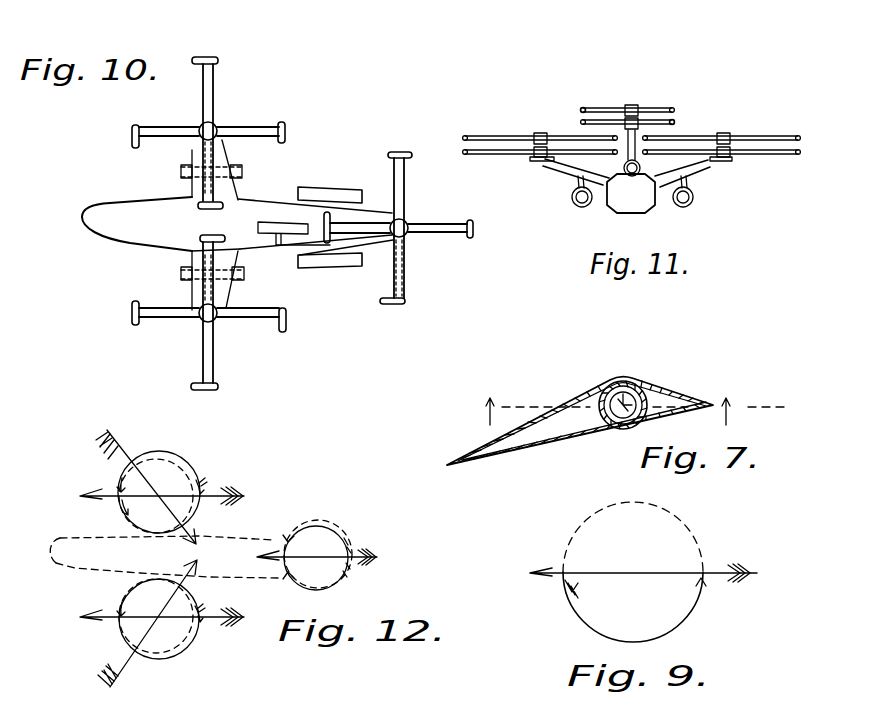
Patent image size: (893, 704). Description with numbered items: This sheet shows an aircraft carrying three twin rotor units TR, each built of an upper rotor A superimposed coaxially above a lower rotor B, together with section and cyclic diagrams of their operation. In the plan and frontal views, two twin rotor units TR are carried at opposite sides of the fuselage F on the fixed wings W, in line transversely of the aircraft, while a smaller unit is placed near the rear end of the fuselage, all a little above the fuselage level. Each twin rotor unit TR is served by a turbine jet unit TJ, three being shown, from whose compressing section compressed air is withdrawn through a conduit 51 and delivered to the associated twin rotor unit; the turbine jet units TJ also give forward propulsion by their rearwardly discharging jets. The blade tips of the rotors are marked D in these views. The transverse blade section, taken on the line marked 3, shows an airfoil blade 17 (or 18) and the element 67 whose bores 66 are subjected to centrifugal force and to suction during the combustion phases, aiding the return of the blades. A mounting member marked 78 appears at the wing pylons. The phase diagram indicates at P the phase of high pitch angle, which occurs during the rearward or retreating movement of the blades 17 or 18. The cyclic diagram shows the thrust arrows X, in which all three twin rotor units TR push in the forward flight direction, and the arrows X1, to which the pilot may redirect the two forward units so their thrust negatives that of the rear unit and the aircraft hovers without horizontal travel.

In FIG. 10, the blades 17 is at (249, 138).
In FIG. 11, the blades 17 is at (492, 136).
In FIG. 7, the blades 17 is at (691, 393).
In FIG. 11, the blades 18 is at (488, 154).
In FIG. 10, the conduit 51 is at (204, 153).
In FIG. 7, the bores 66 is at (601, 392).
In FIG. 7, the elements 67 is at (653, 385).
In FIG. 10, the rotor mount bracket 78 is at (181, 170).
In FIG. 11, the rotor mount bracket 78 is at (623, 167).
In FIG. 7, the section line 3- 3 is at (628, 415).
In FIG. 10, the blade tip cap D is at (197, 65).
In FIG. 11, the blade tip cap D is at (583, 107).
In FIG. 10, the twin rotor unit TR is at (155, 150).
In FIG. 11, the twin rotor unit TR is at (528, 128).
In FIG. 10, the wing W is at (237, 190).
In FIG. 11, the wing W is at (697, 168).
In FIG. 10, the fuselage F is at (80, 220).
In FIG. 10, the turbine jet unit TJ is at (272, 232).
In FIG. 11, the turbine jet unit TJ is at (572, 199).
In FIG. 12, the upper rotor A is at (173, 452).
In FIG. 12, the lower rotor B is at (154, 528).
In FIG. 12, the arrows X is at (82, 497).
In FIG. 9, the arrows X is at (546, 580).
In FIG. 12, the arrows X1 is at (199, 547).
In FIG. 9, the phase of high pitch angle P is at (612, 638).